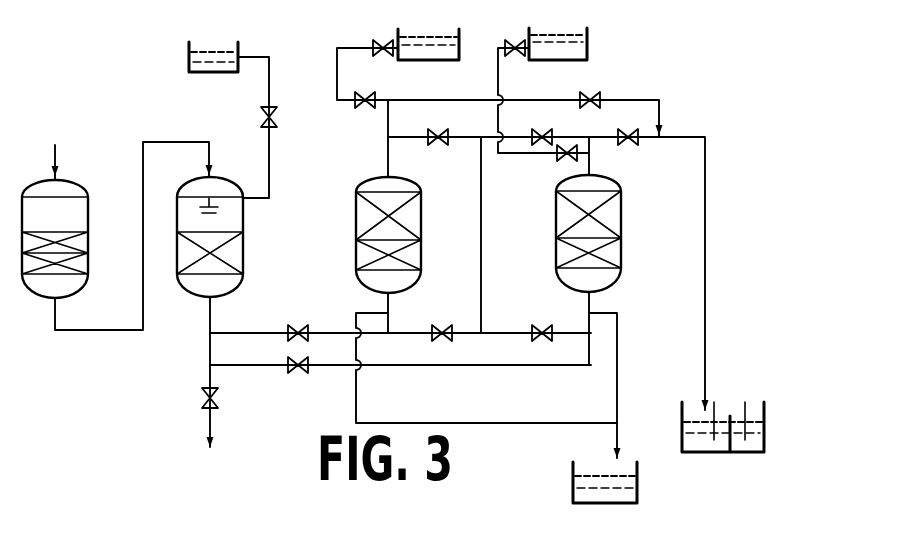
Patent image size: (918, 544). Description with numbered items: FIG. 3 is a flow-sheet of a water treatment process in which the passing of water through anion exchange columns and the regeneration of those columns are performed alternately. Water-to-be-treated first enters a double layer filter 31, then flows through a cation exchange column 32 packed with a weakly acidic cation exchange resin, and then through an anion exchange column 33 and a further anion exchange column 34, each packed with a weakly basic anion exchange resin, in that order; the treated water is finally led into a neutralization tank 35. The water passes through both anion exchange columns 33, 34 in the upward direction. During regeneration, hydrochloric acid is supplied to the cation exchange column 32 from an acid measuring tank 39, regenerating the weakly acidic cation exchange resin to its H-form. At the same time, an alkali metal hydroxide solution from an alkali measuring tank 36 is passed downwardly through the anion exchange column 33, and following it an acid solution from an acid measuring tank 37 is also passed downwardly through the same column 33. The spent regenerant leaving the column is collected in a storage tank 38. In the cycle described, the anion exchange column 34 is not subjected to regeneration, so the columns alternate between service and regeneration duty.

The double layer filter 31 is at (88, 232).
The cation exchange column 32 is at (243, 236).
The anion exchange column 33 is at (421, 232).
The anion exchange column 34 is at (621, 232).
The neutralization tank 35 is at (764, 426).
The alkali measuring tank 36 is at (587, 50).
The acid measuring tank 37 is at (459, 38).
The storage tank 38 is at (637, 482).
The acid measuring tank 39 is at (238, 48).